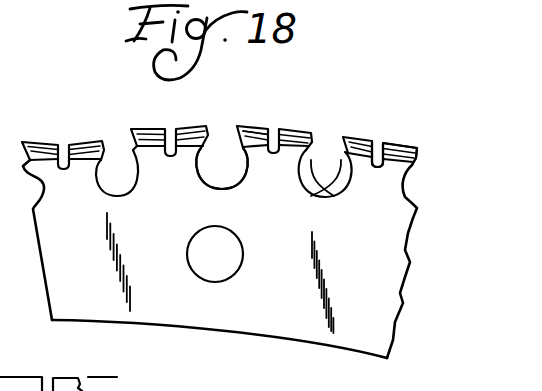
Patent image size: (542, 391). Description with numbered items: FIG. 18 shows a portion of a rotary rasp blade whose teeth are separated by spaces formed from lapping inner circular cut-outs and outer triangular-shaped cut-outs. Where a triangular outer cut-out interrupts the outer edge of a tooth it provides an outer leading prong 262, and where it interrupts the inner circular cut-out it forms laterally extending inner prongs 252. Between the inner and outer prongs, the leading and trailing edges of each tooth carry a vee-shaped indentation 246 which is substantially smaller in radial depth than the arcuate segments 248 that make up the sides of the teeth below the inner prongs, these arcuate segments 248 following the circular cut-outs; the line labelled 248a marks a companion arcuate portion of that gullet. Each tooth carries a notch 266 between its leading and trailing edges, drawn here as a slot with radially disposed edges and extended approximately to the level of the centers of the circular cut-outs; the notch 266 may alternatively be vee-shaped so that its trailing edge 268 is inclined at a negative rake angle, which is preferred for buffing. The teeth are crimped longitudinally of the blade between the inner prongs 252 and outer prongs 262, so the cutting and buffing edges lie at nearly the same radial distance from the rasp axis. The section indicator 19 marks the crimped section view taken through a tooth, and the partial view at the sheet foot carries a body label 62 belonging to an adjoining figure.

The vee-shaped indentation 246 is at (340, 148).
The outer leading prong 262 is at (238, 127).
The notch 266 is at (380, 141).
The trailing edge of notch 268 is at (385, 142).
The inner prong 252 is at (232, 151).
The gullet arc (first) 248a is at (318, 193).
The arcuate segment 248 is at (327, 200).
The section line 19- 19 is at (277, 72).
The blade body (adjacent figure) 62 is at (60, 363).